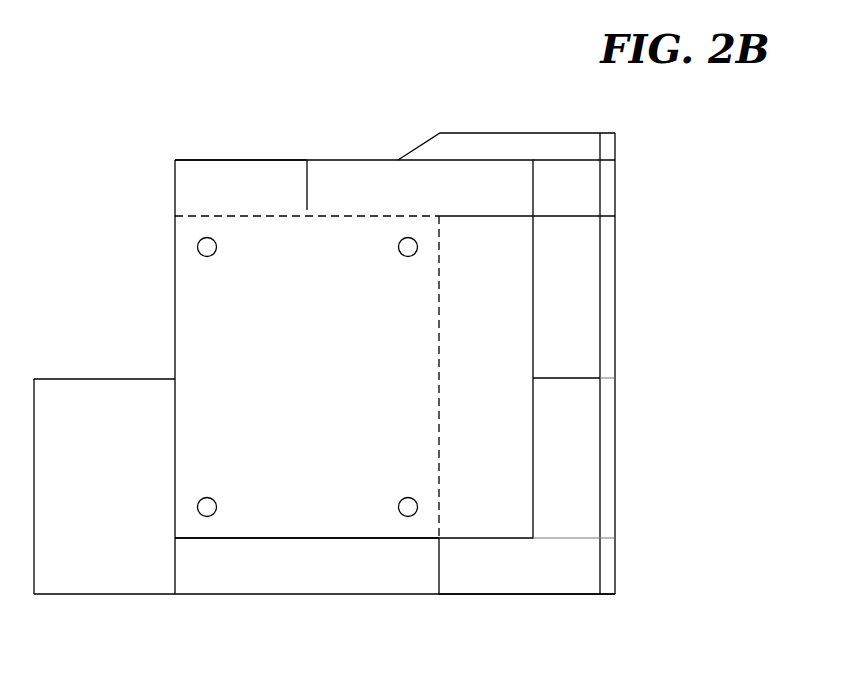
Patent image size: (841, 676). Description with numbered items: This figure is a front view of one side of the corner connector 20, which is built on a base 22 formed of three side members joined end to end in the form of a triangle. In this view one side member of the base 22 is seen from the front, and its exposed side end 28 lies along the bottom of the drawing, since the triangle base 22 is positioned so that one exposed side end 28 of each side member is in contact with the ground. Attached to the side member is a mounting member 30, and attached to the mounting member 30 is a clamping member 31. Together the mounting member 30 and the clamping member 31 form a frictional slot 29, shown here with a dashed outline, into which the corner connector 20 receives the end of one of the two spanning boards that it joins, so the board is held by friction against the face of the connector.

The corner connector 20 is at (73, 259).
The base 22 is at (106, 394).
The exposed side end 28 is at (520, 597).
The frictional slot 29 is at (486, 497).
The mounting member 30 is at (222, 220).
The clamping member 31 is at (201, 289).